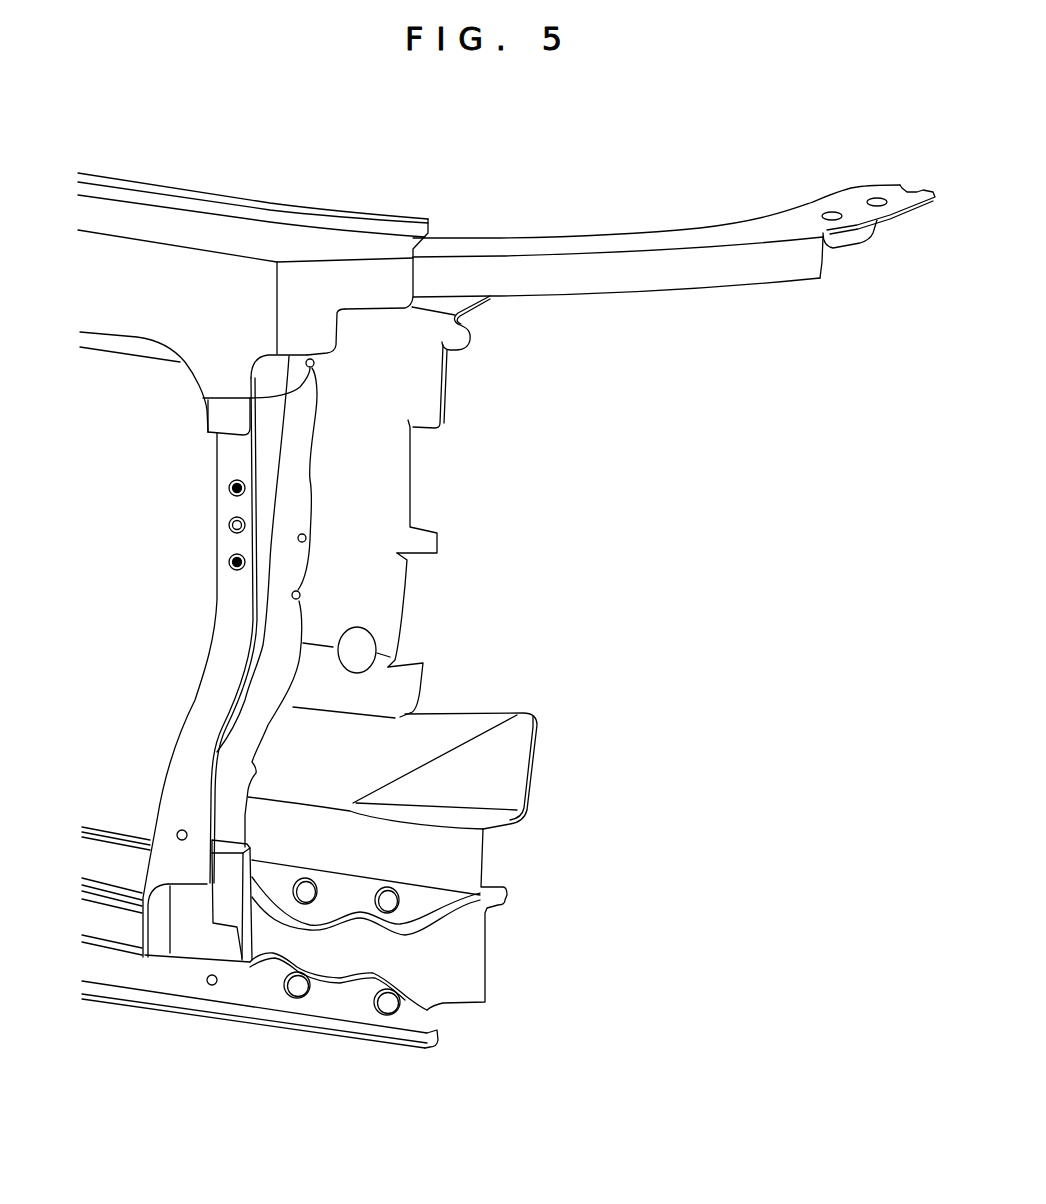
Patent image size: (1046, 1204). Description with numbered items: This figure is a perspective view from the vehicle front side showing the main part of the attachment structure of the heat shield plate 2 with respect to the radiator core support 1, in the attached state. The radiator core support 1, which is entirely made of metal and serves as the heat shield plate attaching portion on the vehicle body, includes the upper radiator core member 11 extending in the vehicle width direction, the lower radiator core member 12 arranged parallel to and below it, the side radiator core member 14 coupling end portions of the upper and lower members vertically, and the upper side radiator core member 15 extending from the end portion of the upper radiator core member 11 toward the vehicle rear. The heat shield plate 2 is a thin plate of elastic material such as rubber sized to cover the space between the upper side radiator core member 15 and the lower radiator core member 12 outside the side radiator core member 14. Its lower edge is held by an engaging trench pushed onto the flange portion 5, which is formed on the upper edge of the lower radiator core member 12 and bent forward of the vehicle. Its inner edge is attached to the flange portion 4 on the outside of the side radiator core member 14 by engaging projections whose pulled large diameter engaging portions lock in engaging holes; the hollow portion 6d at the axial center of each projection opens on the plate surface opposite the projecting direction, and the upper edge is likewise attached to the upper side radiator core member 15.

The radiator core support 1 is at (207, 182).
The upper radiator core member 11 is at (243, 237).
The upper side radiator core member 15 is at (783, 230).
The flange portion 4 is at (296, 397).
The heat shield plate 2 is at (430, 486).
The hollow portion 6d is at (203, 398).
The side radiator core member 14 is at (227, 585).
The lower radiator core member 12 is at (110, 827).
The flange portion 5 is at (505, 902).